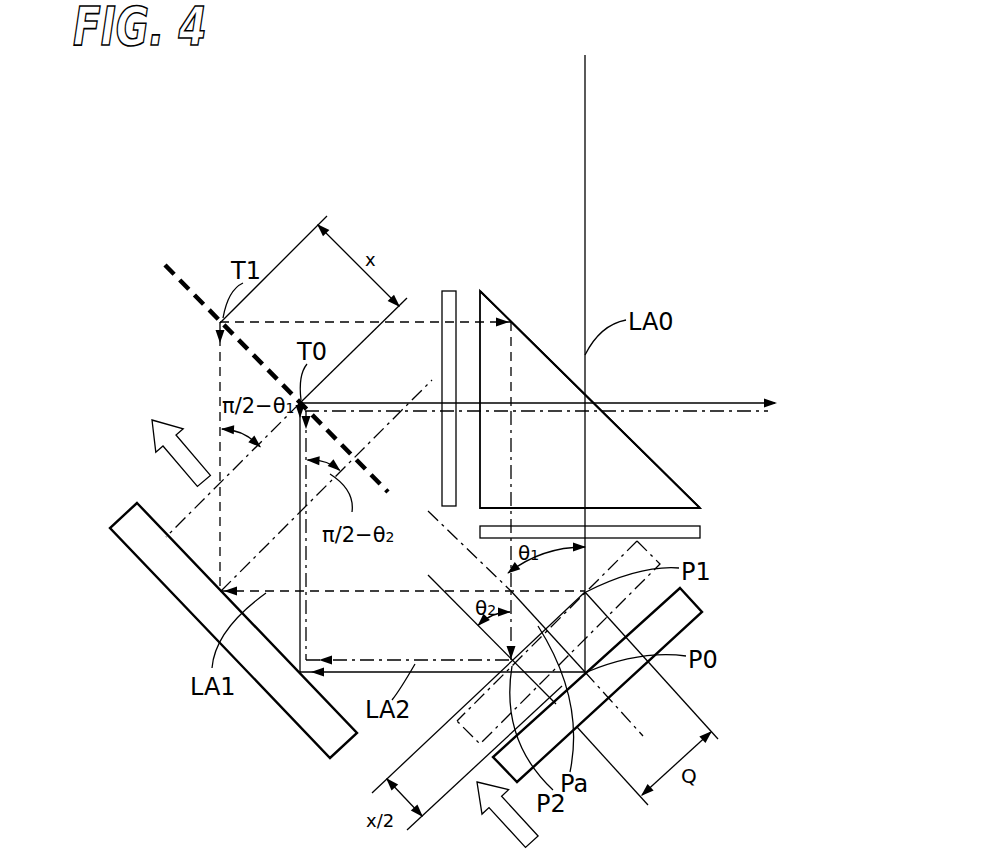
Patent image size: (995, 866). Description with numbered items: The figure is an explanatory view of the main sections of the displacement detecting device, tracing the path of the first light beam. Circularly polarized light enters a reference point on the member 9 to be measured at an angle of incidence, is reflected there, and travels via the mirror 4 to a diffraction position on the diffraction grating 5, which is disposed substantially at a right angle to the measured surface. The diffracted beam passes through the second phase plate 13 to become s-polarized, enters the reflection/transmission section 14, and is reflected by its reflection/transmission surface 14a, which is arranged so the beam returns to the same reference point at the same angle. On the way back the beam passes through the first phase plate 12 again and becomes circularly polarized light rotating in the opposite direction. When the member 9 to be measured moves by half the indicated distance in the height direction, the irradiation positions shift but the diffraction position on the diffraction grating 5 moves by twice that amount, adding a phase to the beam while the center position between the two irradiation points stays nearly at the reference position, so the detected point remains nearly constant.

The mirror 4 is at (313, 744).
The diffraction grating 5 is at (182, 281).
The member to be measured 9 is at (694, 620).
The first phase plate 12 is at (702, 538).
The second phase plate 13 is at (449, 291).
The reflection/transmission section 14 is at (672, 480).
The reflection/transmission surface 14a is at (698, 500).